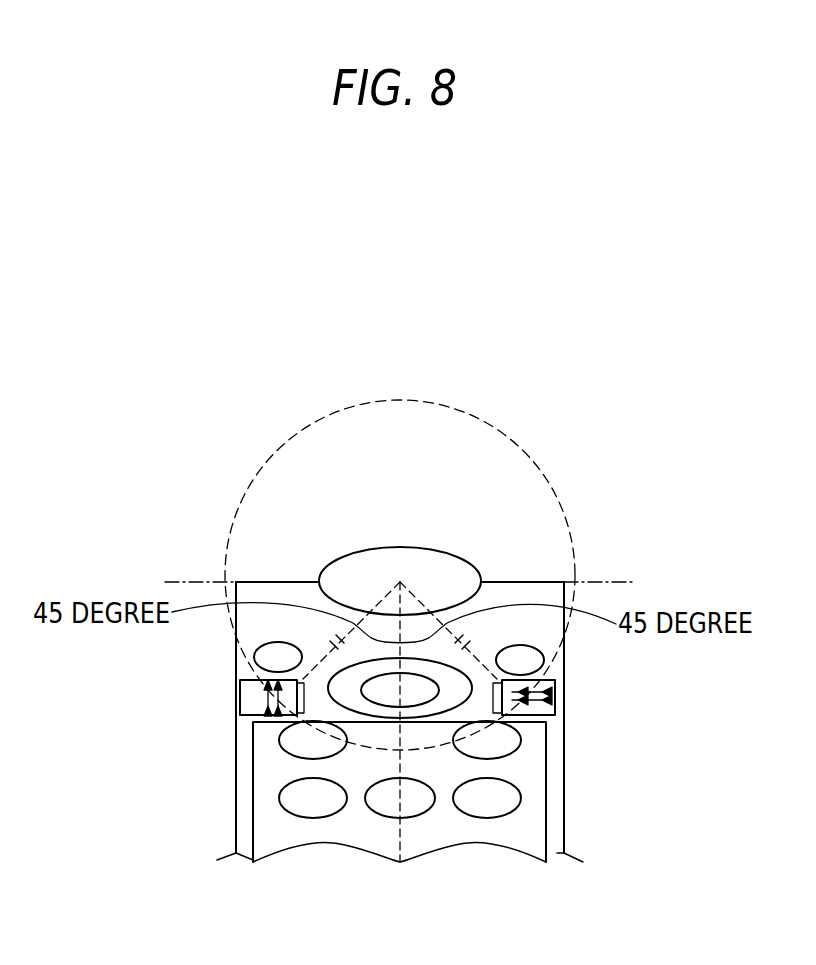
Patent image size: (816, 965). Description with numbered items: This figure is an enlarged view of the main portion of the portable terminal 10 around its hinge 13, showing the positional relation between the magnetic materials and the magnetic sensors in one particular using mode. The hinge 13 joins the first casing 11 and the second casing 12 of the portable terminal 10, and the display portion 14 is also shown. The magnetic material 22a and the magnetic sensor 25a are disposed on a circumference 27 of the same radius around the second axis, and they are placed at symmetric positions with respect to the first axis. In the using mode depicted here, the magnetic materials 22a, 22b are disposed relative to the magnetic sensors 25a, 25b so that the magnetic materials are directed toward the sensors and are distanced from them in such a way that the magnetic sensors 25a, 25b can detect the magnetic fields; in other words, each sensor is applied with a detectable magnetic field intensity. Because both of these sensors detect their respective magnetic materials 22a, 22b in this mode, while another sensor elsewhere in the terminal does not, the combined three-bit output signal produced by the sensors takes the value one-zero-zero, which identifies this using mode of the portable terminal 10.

The portable terminal 10 is at (560, 448).
The circumference around second axis 27 is at (297, 436).
The hinge 13 is at (400, 547).
The magnetic sensor 25a is at (245, 673).
The magnetic sensor 25b is at (565, 712).
The magnetic material 22a is at (236, 700).
The magnetic material 22b is at (565, 677).
The first casing 11 is at (243, 772).
The second casing 12 is at (553, 787).
The display portion 14 is at (236, 830).